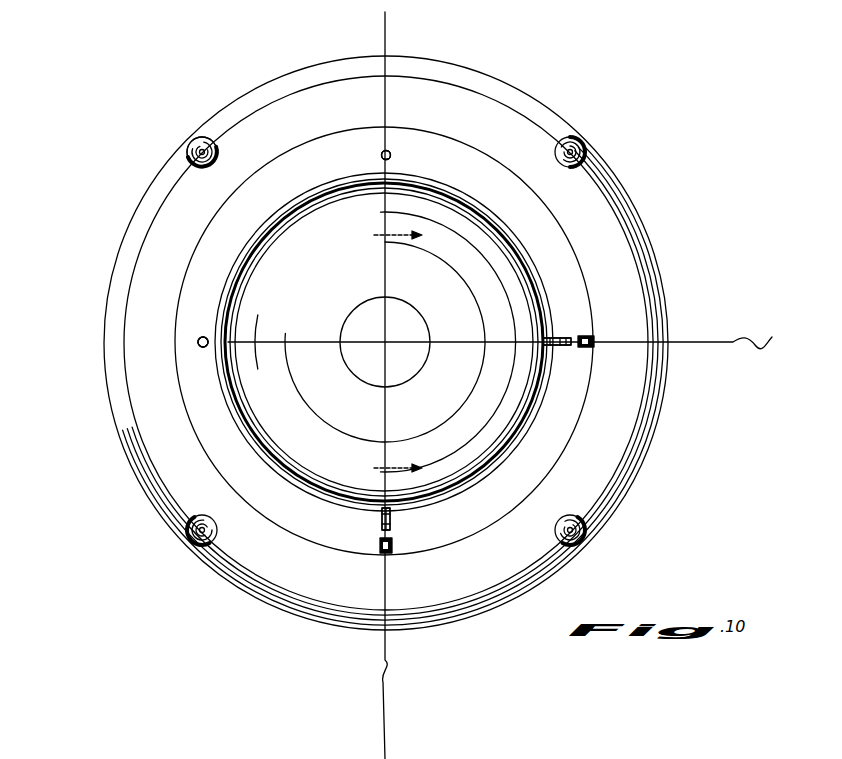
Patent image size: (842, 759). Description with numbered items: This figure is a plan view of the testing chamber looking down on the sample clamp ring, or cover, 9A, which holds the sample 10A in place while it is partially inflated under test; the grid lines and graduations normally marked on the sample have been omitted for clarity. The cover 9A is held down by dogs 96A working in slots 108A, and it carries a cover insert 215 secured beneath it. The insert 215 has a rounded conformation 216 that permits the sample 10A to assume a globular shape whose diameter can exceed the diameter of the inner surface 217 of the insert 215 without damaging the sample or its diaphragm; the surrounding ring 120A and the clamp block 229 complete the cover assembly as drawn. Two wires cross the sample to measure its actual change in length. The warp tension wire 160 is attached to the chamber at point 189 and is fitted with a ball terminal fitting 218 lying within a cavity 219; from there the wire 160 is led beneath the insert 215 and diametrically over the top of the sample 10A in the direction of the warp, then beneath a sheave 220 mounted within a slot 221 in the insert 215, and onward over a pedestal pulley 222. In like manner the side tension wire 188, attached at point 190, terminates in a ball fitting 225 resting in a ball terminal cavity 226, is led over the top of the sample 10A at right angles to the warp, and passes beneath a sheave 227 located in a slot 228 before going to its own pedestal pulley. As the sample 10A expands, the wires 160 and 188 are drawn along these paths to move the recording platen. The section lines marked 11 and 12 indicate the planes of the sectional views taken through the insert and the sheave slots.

The sample clamp ring 9A is at (148, 421).
The mounting ring 120A is at (126, 238).
The cover insert 215 is at (203, 414).
The rounded conformation 216 is at (520, 436).
The inner surface 217 is at (230, 316).
The sample 10A is at (327, 258).
The side tension wire 188 is at (444, 341).
The warp tension wire 160 is at (385, 284).
The section line 11 is at (405, 34).
The section line 12 is at (405, 718).
The dogs 96A is at (206, 140).
The slots 108A is at (198, 150).
The attachment point 190 is at (382, 142).
The cavity 219 is at (392, 153).
The terminal fitting 218 is at (393, 156).
The attachment point 189 is at (190, 342).
The ball terminal cavity 226 is at (203, 337).
The ball fitting 225 is at (203, 348).
The sheave 227 is at (558, 338).
The slot 228 is at (570, 348).
The clamp block 229 is at (588, 335).
The sheave 220 is at (390, 520).
The slot 221 is at (380, 527).
The pedestal pulley 222 is at (394, 548).